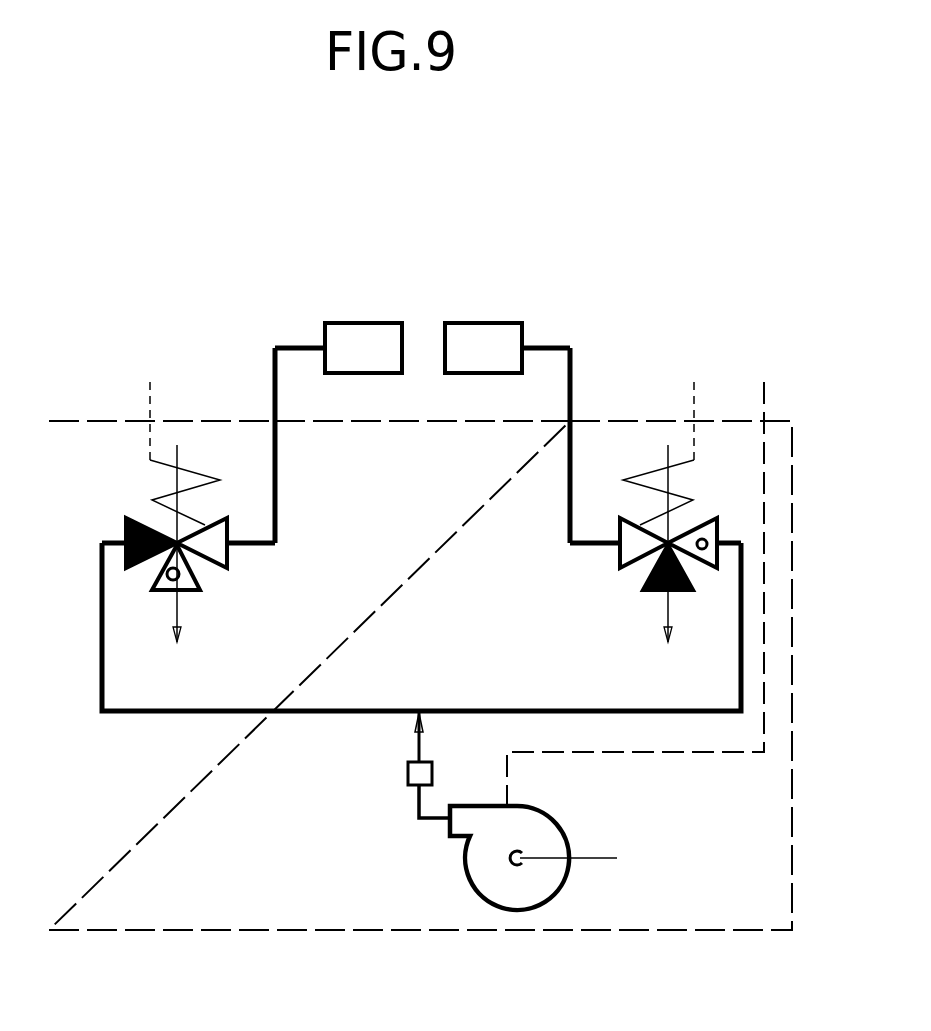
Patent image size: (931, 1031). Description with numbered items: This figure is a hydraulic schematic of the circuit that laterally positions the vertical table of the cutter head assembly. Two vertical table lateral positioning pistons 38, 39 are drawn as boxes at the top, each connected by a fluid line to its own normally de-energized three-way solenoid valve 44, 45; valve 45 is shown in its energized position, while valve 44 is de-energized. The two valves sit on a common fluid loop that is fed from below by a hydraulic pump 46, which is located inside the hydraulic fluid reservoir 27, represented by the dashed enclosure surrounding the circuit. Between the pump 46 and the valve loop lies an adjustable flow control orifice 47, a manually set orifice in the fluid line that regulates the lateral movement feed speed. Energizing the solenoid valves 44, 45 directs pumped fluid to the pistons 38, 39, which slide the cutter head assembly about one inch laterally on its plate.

The hydraulic fluid reservoir 27 is at (283, 930).
The vertical table lateral positioning piston 38 is at (495, 322).
The vertical table lateral positioning piston 39 is at (330, 322).
The 3-way solenoid valve 44 is at (227, 558).
The 3-way solenoid valve 45 is at (613, 559).
The hydraulic pump 46 is at (553, 815).
The adjustable flow control orifice 47 is at (408, 777).